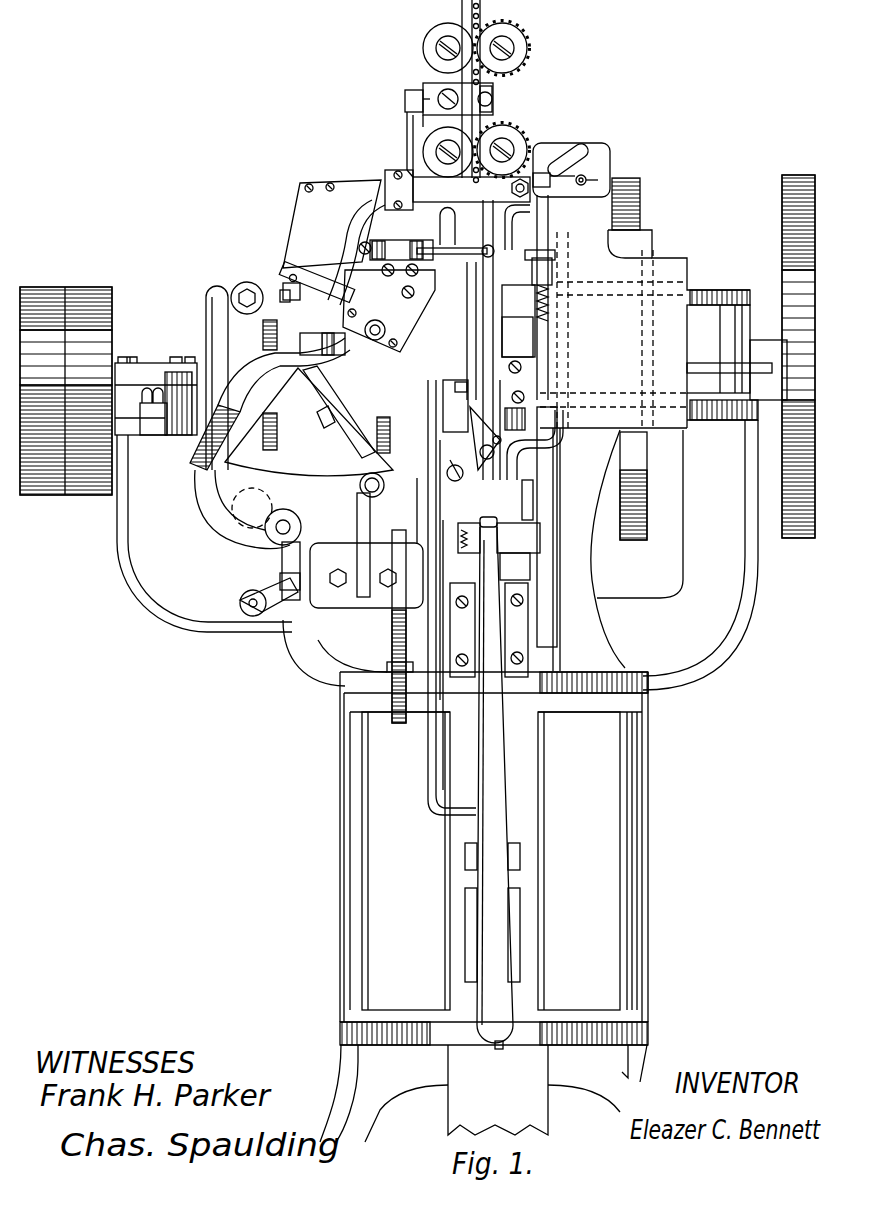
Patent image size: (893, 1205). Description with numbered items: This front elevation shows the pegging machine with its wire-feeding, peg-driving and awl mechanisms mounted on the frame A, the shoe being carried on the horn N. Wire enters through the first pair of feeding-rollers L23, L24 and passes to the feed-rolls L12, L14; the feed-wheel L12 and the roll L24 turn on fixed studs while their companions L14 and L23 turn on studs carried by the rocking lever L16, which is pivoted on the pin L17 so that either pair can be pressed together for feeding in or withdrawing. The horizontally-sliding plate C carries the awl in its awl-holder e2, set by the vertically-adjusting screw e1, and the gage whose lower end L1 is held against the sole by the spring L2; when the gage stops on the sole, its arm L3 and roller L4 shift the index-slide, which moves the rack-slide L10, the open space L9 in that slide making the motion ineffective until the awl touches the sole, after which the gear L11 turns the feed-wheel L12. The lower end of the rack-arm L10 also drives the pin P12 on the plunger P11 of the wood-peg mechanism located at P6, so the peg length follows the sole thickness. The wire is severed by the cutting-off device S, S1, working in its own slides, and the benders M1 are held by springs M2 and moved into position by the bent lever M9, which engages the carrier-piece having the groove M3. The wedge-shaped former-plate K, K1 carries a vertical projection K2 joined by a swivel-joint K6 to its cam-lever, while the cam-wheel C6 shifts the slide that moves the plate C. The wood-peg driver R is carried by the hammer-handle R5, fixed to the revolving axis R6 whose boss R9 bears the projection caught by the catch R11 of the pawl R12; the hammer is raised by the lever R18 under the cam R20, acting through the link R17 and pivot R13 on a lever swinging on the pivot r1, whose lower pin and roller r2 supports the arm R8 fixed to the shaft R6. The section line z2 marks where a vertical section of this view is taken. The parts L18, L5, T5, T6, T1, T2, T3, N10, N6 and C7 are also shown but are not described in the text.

The feeding-roller L23 is at (444, 40).
The feeding-roller L24 is at (515, 48).
The feed-roll L14 is at (448, 152).
The gear L11 is at (511, 175).
The roller adjusting box L18 is at (470, 92).
The section line z2 is at (423, 98).
The rocking lever L16 is at (432, 74).
The pin L17 is at (440, 108).
The rack-slide L10 is at (457, 190).
The gage lower end L1 is at (596, 152).
The arm L3 is at (562, 181).
The feed lever pivot L5 is at (595, 186).
The feed-wheel L12 is at (522, 152).
The open space L9 is at (510, 226).
The pin P12 is at (317, 268).
The plunger P11 is at (316, 282).
The wood-peg mechanism P6 is at (389, 308).
The ticket guide block T5 is at (407, 234).
The ticket guide bar T6 is at (455, 244).
The pivot R13 is at (260, 290).
The link R17 is at (276, 284).
The lever R18 is at (231, 378).
The hammer-handle R5 is at (270, 404).
The wood-peg driver R is at (328, 344).
The catch R11 is at (339, 412).
The cam R20 is at (318, 424).
The arm R8 is at (309, 422).
The revolving axis R6 is at (290, 525).
The boss R9 is at (302, 534).
The pawl R12 is at (269, 590).
The roller L4 is at (291, 580).
The pivot r1 is at (262, 505).
The pin and roller r2 is at (360, 486).
The main frame A is at (436, 749).
The type bar rod T1 is at (420, 450).
The type block T3 is at (455, 406).
The type block pin T2 is at (468, 391).
The cutting-off device S is at (474, 452).
The cutting-off device S1 is at (496, 443).
The former-plate K is at (518, 292).
The spring L2 is at (555, 303).
The vertical projection K2 is at (535, 285).
The former-plate K1 is at (517, 360).
The swivel-joint K6 is at (540, 245).
The vertically-adjusting screw e1 is at (523, 422).
The awl-holder e2 is at (542, 445).
The bent lever M9 is at (545, 510).
The bender M1 is at (518, 526).
The spring M2 is at (515, 548).
The groove M3 is at (465, 549).
The armature cap N10 is at (480, 511).
The horn N is at (492, 788).
The armature tube N6 is at (439, 667).
The sliding plate C is at (649, 359).
The casing bearing box C7 is at (737, 345).
The cam-wheel C6 is at (798, 356).